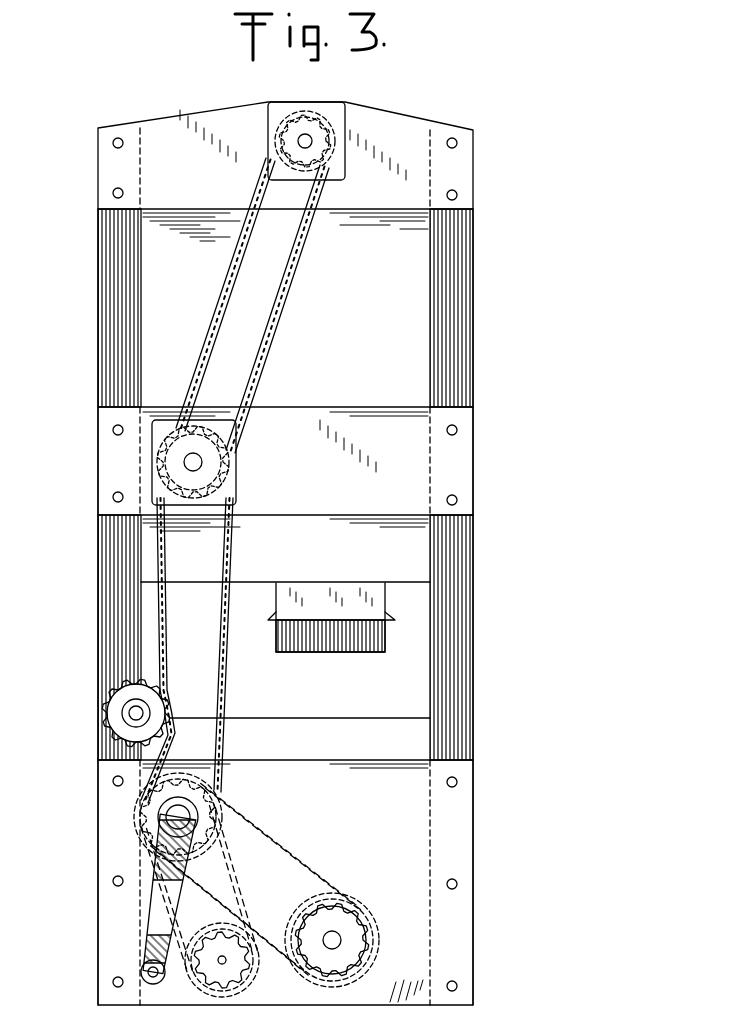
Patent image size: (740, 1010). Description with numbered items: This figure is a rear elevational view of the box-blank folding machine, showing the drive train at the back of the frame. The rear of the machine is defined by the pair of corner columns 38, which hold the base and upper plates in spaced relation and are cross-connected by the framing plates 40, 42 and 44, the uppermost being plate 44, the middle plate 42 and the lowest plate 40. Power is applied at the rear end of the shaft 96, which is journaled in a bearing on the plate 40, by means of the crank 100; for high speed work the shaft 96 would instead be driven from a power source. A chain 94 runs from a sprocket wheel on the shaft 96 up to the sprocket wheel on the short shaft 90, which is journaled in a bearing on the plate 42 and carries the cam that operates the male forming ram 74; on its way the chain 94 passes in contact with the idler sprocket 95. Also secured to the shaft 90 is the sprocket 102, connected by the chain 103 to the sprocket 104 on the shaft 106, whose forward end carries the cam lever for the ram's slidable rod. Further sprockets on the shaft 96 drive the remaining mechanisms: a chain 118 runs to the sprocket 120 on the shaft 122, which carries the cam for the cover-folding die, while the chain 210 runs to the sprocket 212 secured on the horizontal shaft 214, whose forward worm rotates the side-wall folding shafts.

The corner columns 38 is at (100, 600).
The framing plate 40 is at (462, 805).
The framing plate 42 is at (465, 462).
The framing plate 44 is at (467, 165).
The male forming ram 74 is at (338, 656).
The short shaft 90 is at (202, 462).
The chain 94 is at (225, 680).
The idler sprocket 95 is at (112, 714).
The shaft 96 is at (170, 817).
The crank 100 is at (155, 924).
The sprocket 102 is at (240, 497).
The chain 103 is at (287, 283).
The sprocket 104 is at (347, 176).
The shaft 106 is at (312, 141).
The chain 118 is at (296, 861).
The sprocket 120 is at (300, 920).
The shaft 122 is at (340, 937).
The chain 210 is at (232, 864).
The sprocket 212 is at (199, 888).
The horizontal shaft 214 is at (224, 962).